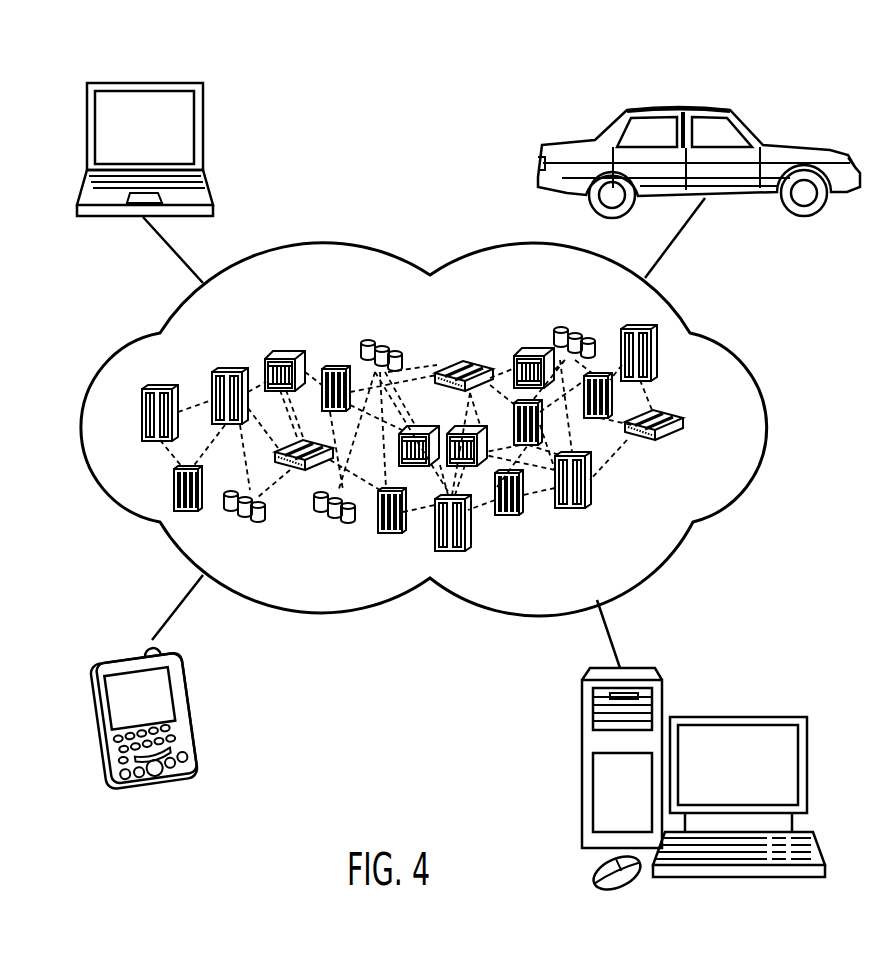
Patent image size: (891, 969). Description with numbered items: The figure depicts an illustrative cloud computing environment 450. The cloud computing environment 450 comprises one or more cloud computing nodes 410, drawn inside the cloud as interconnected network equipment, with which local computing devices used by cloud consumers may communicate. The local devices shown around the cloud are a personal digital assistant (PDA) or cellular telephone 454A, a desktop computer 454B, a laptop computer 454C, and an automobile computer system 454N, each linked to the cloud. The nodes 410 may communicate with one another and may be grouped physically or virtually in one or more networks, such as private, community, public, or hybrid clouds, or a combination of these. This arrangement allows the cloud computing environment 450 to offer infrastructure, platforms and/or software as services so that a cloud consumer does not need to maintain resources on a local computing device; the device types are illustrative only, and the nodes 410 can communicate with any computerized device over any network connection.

The cloud computing environment 450 is at (434, 433).
The cloud computing node 410 is at (690, 427).
The personal digital assistant (PDA) or cellular telephone 454A is at (123, 655).
The desktop computer 454B is at (738, 713).
The laptop computer 454C is at (143, 82).
The automobile computer system 454N is at (677, 108).